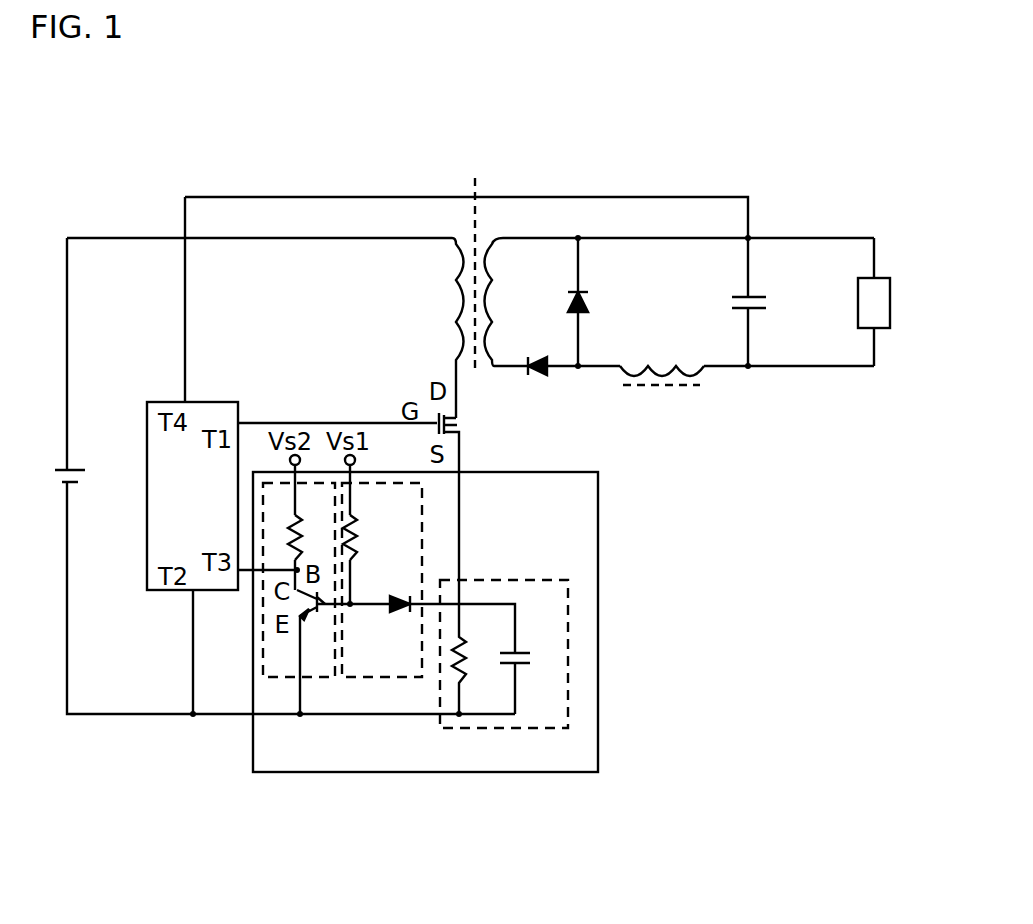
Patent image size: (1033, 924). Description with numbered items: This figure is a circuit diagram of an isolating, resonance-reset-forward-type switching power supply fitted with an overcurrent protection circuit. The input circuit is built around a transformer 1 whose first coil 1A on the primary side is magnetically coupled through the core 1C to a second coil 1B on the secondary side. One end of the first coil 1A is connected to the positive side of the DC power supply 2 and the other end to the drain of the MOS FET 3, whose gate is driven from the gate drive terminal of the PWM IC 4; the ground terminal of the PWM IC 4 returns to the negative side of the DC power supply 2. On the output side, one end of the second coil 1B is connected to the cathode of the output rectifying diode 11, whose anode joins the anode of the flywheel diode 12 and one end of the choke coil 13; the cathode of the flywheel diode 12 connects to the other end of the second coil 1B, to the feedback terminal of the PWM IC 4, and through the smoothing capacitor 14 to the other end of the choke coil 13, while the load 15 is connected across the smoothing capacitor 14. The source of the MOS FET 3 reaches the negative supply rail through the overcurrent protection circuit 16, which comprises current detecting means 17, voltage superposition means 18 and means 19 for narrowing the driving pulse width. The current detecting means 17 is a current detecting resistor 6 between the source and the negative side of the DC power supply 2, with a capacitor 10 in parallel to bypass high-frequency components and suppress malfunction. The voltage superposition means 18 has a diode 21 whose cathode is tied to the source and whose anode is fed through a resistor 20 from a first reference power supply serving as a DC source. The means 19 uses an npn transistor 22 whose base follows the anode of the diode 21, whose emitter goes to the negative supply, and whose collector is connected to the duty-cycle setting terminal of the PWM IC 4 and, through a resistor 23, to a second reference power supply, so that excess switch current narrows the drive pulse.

The transformer 1 is at (474, 233).
The first coil 1A is at (447, 250).
The second coil 1B is at (509, 255).
The core 1C is at (475, 178).
The DC power supply 2 is at (56, 480).
The MOS FET 3 is at (463, 424).
The PWM IC 4 is at (163, 400).
The current detecting resistor 6 is at (470, 662).
The capacitor 10 is at (531, 660).
The output rectifying diode 11 is at (548, 374).
The flywheel diode 12 is at (588, 300).
The choke coil 13 is at (685, 390).
The smoothing capacitor 14 is at (773, 300).
The load 15 is at (890, 296).
The overcurrent protection circuit 16 is at (598, 735).
The current detecting means 17 is at (497, 732).
The voltage superposition means 18 is at (395, 680).
The means for narrowing the driving pulse width 19 is at (296, 680).
The resistor 20 is at (362, 538).
The diode 21 is at (392, 610).
The npn transistor 22 is at (314, 622).
The resistor 23 is at (311, 537).